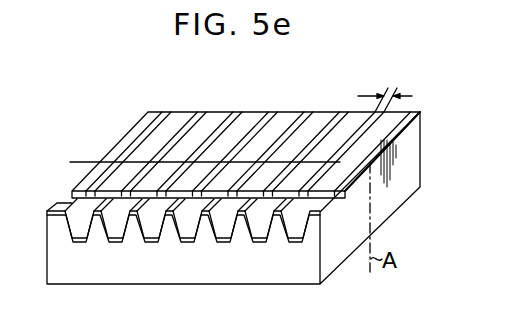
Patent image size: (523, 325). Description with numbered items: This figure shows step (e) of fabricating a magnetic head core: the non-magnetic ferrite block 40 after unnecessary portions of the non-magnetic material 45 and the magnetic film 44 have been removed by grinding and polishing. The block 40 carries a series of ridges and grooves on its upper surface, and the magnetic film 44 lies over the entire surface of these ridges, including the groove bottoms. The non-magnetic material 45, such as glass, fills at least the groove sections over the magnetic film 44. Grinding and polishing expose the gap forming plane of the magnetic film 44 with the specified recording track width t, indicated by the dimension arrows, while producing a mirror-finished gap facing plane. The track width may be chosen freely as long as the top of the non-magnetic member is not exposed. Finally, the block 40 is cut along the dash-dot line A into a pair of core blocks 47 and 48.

The block 40 is at (452, 217).
The magnetic film 44 is at (354, 130).
The non-magnetic material 45 is at (397, 113).
The core block 47 is at (333, 268).
The core block 48 is at (412, 172).